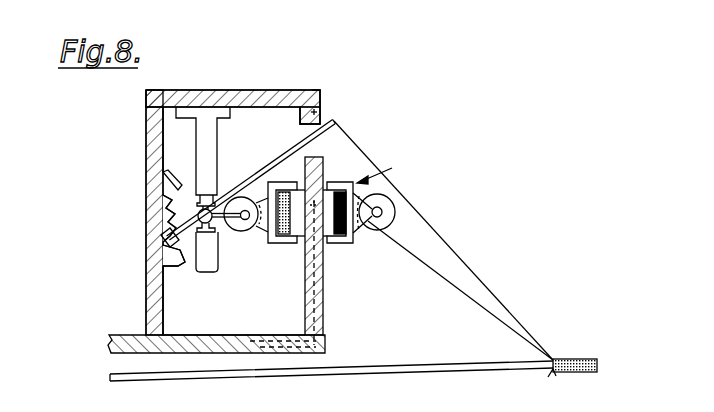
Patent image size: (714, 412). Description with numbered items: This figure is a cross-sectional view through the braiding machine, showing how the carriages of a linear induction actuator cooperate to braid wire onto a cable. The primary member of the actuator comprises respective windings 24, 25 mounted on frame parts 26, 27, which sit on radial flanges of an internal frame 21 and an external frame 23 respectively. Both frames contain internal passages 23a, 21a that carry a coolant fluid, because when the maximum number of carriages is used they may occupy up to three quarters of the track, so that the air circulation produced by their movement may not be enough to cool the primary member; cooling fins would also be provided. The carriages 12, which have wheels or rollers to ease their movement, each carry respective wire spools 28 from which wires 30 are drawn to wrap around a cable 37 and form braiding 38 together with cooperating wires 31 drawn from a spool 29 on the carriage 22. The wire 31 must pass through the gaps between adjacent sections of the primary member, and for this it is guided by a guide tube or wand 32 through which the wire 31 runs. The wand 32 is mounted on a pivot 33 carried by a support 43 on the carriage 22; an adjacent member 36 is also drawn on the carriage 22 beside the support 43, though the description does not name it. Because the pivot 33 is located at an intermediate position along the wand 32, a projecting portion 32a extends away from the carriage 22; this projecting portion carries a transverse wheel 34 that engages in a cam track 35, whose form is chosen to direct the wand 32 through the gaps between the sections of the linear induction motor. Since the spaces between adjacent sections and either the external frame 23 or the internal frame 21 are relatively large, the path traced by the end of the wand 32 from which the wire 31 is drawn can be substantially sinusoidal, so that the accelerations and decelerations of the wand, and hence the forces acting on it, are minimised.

The carriage 12 is at (388, 171).
The internal frame 21 is at (325, 343).
The internal passage 21a is at (318, 297).
The carriage 22 is at (276, 247).
The external frame 23 is at (318, 93).
The internal passage 23a is at (320, 112).
The winding 24 is at (333, 228).
The winding 25 is at (308, 192).
The frame part 26 is at (335, 186).
The frame part 27 is at (297, 228).
The wire spool 28 is at (392, 209).
The spool 29 is at (249, 197).
The wire 30 is at (424, 265).
The wire 31 is at (456, 251).
The guide tube (wand) 32 is at (296, 148).
The projecting portion 32a is at (186, 246).
The pivot 33 is at (198, 215).
The transverse wheel 34 is at (172, 238).
The cam track 35 is at (152, 186).
The support 36 is at (200, 130).
The cable 37 is at (358, 371).
The braiding 38 is at (575, 358).
The support 43 is at (219, 229).